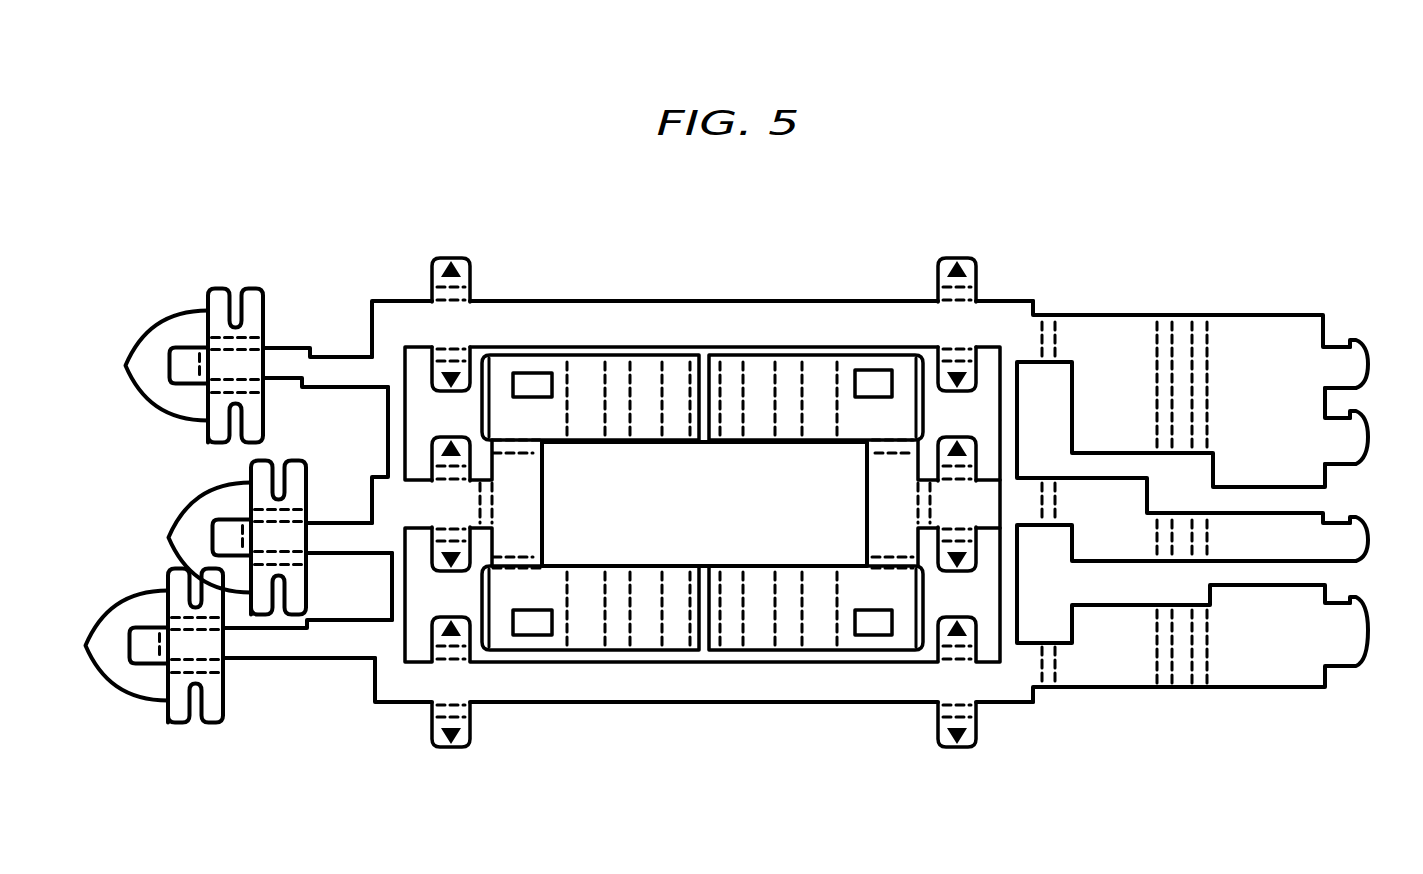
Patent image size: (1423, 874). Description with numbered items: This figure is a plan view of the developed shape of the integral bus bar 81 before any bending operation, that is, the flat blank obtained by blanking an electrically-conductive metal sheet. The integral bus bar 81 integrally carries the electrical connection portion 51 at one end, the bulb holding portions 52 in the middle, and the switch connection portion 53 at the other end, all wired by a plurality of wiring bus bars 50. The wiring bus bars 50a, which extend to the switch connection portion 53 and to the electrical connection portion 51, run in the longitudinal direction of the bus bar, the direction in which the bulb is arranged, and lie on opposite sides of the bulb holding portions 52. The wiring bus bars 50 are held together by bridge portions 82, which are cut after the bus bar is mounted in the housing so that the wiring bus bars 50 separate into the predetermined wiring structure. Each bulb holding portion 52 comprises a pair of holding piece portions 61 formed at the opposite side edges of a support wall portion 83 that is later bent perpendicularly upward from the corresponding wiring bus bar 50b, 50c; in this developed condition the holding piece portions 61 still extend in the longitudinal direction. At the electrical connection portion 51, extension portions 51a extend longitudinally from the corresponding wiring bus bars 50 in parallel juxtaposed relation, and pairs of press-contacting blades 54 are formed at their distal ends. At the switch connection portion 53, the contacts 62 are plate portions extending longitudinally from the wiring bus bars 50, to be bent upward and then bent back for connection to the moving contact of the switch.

The wiring bus bar 50 is at (702, 509).
The wiring bus bar 50a is at (517, 320).
The wiring bus bar 50b is at (1000, 530).
The wiring bus bar 50c is at (440, 507).
The electrical connection portion 51 is at (286, 280).
The extension portion 51a is at (310, 360).
The bulb holding portion 52 is at (630, 350).
The switch connection portion 53 is at (1198, 260).
The press-contacting blade 54 is at (127, 366).
The holding piece portion 61 is at (702, 440).
The contact 62 is at (1290, 343).
The integral bus bar 81 is at (1098, 222).
The bridge portion 82 is at (400, 430).
The support wall portion 83 is at (513, 522).